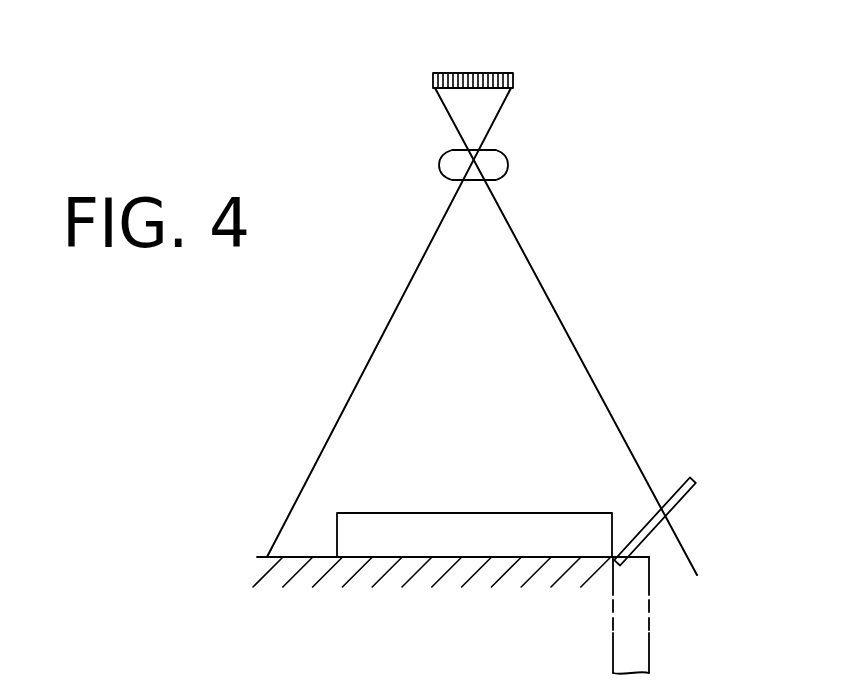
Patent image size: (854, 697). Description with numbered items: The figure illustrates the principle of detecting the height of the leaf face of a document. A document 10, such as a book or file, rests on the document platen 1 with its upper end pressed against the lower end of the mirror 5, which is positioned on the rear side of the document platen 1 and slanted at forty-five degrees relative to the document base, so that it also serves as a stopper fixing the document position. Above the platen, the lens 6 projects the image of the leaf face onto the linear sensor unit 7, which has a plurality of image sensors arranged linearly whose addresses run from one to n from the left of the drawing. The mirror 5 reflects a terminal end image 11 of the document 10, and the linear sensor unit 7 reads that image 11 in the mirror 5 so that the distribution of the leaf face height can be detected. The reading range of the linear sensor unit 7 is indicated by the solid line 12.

The document platen 1 is at (402, 574).
The mirror 5 is at (697, 480).
The lens 6 is at (509, 162).
The linear sensor unit 7 is at (472, 72).
The document 10 is at (476, 513).
The terminal end image 11 is at (632, 655).
The solid line indicating reading range 12 is at (428, 253).